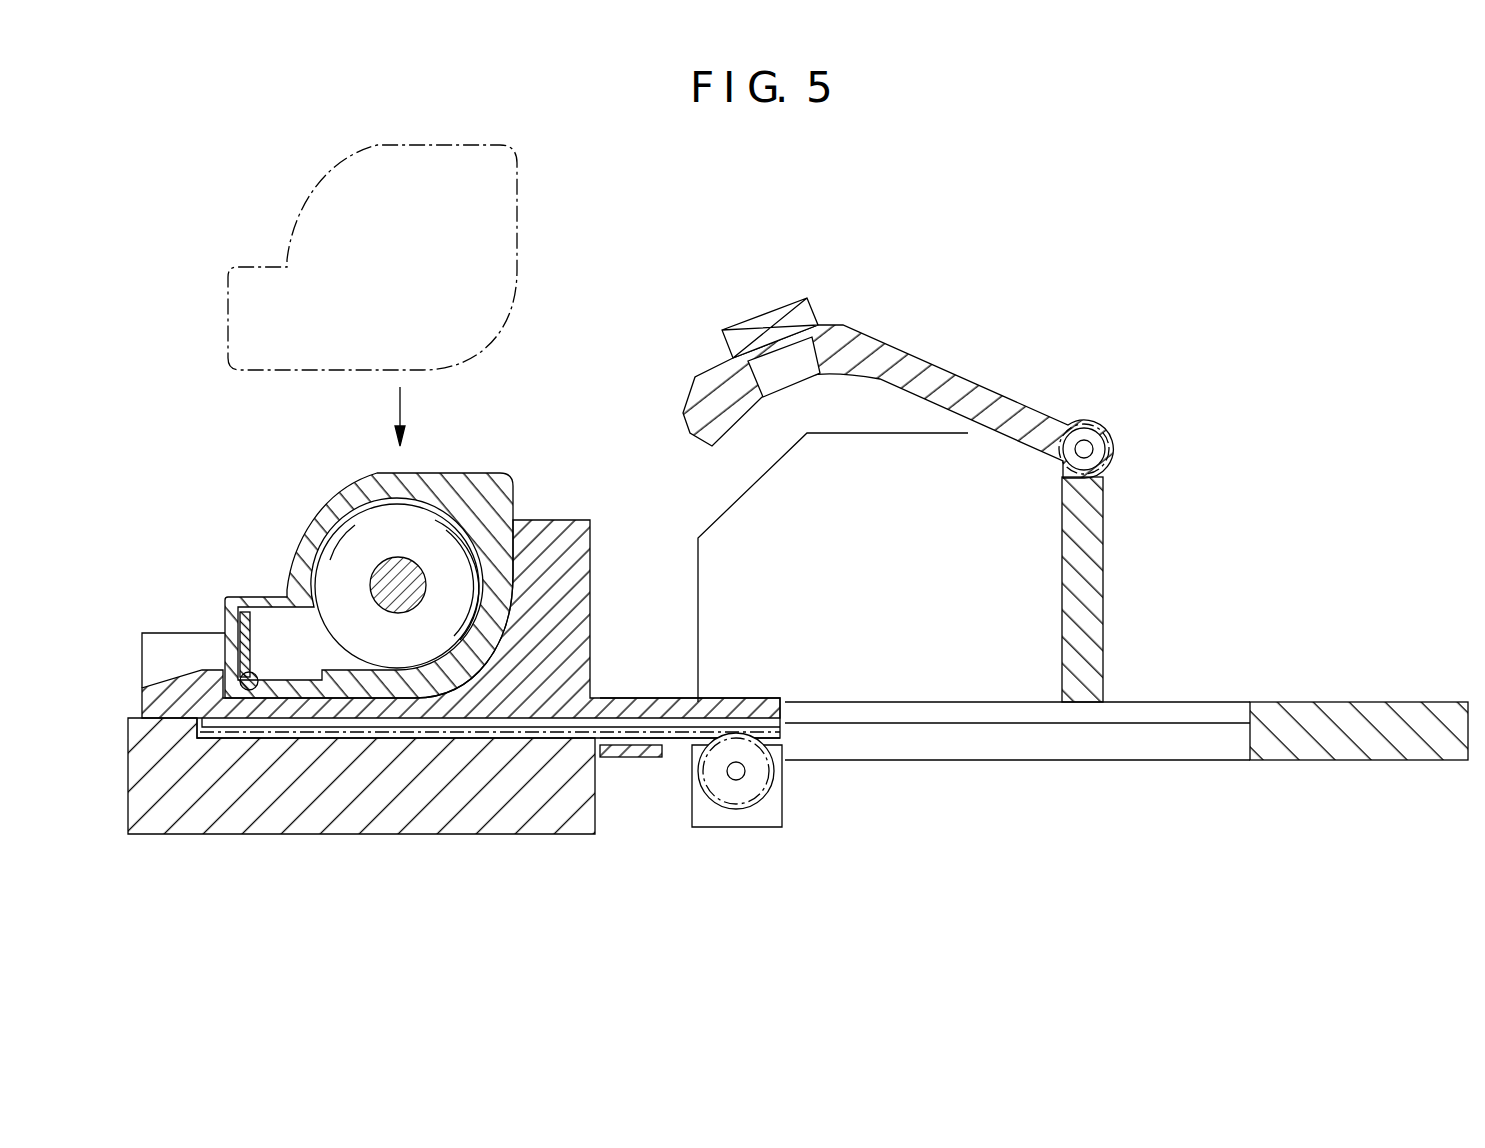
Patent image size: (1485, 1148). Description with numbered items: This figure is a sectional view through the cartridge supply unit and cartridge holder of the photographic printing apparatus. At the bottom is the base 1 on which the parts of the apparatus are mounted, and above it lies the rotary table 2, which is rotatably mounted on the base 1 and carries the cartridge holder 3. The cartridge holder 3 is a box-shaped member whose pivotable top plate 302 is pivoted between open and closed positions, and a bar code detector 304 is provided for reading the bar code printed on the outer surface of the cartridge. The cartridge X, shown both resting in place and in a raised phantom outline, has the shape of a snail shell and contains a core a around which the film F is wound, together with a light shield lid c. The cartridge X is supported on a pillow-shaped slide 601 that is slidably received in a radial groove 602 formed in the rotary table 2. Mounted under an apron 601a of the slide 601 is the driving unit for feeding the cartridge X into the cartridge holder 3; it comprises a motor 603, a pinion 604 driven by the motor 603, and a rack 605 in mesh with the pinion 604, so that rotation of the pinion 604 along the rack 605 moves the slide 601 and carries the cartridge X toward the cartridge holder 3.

The cartridge X is at (317, 215).
The core a is at (387, 567).
The film F is at (433, 517).
The light shield lid c is at (258, 635).
The base 1 is at (347, 822).
The rotary table 2 is at (1340, 715).
The cartridge holder 3 is at (905, 455).
The top plate 302 is at (930, 370).
The bar code detector 304 is at (762, 305).
The slide 601 is at (549, 520).
The apron 601a is at (655, 697).
The radial groove 602 is at (935, 723).
The motor 603 is at (770, 813).
The pinion 604 is at (732, 793).
The rack 605 is at (677, 733).